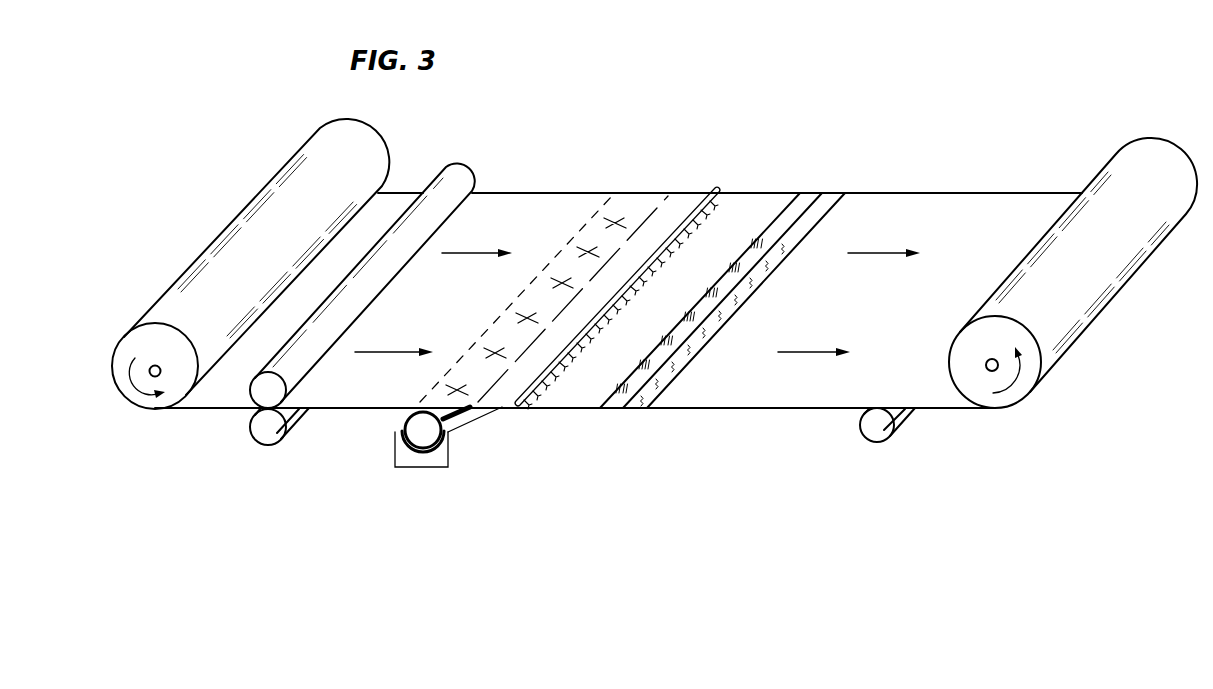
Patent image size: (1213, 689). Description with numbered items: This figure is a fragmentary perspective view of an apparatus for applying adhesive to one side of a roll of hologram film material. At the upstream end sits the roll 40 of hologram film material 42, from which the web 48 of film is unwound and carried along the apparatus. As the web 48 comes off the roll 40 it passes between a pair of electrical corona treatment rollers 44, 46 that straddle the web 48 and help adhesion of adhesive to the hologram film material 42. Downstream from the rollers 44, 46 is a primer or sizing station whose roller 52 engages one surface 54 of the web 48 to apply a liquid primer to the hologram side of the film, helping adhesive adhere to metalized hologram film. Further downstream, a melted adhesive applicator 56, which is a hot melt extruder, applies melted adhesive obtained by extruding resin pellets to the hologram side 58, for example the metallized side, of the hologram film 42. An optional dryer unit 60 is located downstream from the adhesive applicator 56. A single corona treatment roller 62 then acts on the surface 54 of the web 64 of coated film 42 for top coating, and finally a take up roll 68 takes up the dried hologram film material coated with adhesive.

The roll 40 is at (125, 336).
The hologram film material 42 is at (200, 405).
The electrical corona treatment roller 44 is at (283, 432).
The electrical corona treatment roller 46 is at (260, 390).
The web 48 is at (524, 189).
The roller 52 is at (425, 420).
The surface 54 is at (366, 412).
The melted adhesive applicator 56 is at (692, 212).
The hologram side 58 is at (625, 284).
The dryer unit 60 is at (813, 196).
The single corona treatment roller 62 is at (880, 427).
The web of coated film 64 is at (1008, 190).
The take up roll 68 is at (1025, 342).